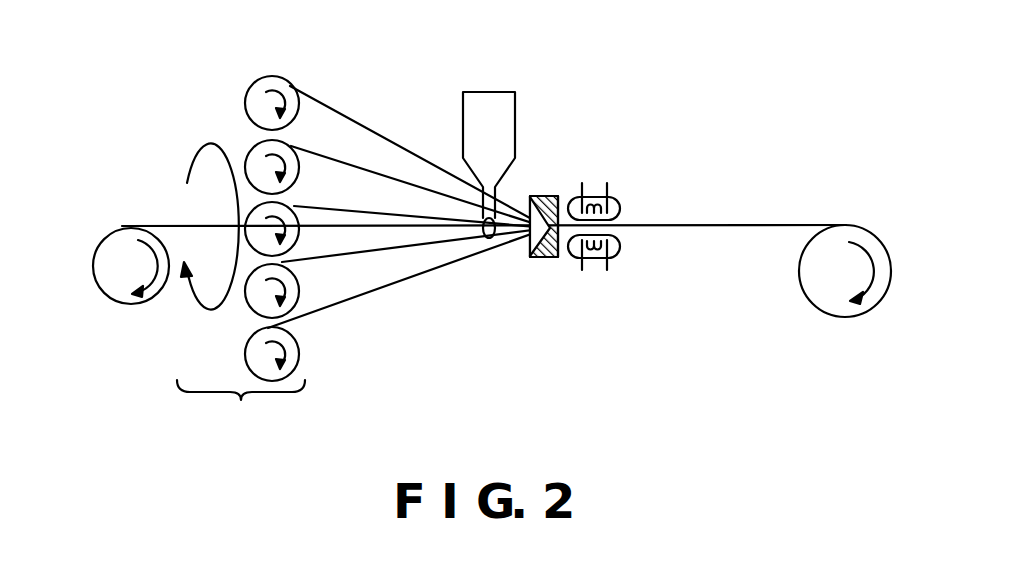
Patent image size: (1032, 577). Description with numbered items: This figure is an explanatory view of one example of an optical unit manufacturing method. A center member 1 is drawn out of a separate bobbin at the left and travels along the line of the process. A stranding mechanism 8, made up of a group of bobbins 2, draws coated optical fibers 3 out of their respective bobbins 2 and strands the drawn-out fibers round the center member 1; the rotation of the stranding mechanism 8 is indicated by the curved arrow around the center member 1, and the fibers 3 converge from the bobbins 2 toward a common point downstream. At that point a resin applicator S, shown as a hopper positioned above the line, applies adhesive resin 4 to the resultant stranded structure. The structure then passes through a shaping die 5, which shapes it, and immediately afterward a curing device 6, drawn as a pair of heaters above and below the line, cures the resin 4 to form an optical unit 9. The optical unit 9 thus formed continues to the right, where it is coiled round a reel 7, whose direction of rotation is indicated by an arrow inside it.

The center member 1 is at (156, 224).
The bobbins 2 is at (280, 79).
The coated optical fibers 3 is at (361, 118).
The adhesive resin 4 is at (484, 100).
The resin applicator S is at (517, 114).
The shaping die 5 is at (549, 197).
The curing device 6 is at (596, 266).
The reel 7 is at (800, 293).
The stranding mechanism 8 is at (243, 233).
The optical unit 9 is at (705, 222).